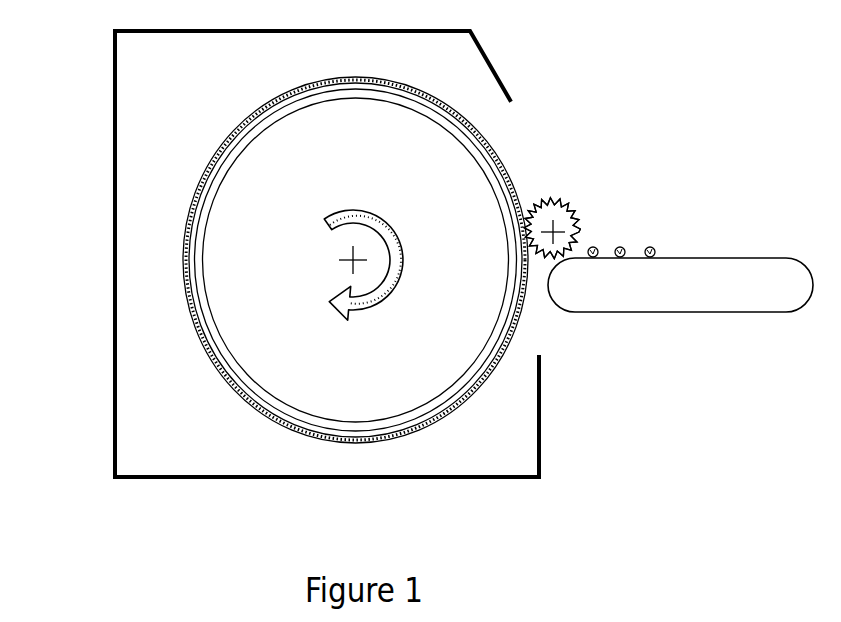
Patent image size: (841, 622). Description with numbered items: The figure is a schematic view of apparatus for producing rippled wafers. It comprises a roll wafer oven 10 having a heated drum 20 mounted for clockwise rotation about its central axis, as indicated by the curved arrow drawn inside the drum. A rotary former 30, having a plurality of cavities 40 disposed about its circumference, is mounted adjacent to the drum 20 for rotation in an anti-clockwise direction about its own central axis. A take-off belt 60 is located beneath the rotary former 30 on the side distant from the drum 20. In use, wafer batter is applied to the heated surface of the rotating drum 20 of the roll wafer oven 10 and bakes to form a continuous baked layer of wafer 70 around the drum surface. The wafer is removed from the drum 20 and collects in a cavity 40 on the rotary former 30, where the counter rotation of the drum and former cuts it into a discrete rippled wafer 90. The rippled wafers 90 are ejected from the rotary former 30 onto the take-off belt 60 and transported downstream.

The roll wafer oven 10 is at (462, 490).
The heated drum 20 is at (245, 395).
The rotary former 30 is at (557, 192).
The cavities 40 is at (565, 197).
The take-off belt 60 is at (710, 257).
The continuous baked layer of wafer 70 is at (185, 237).
The rippled wafer 90 is at (596, 248).